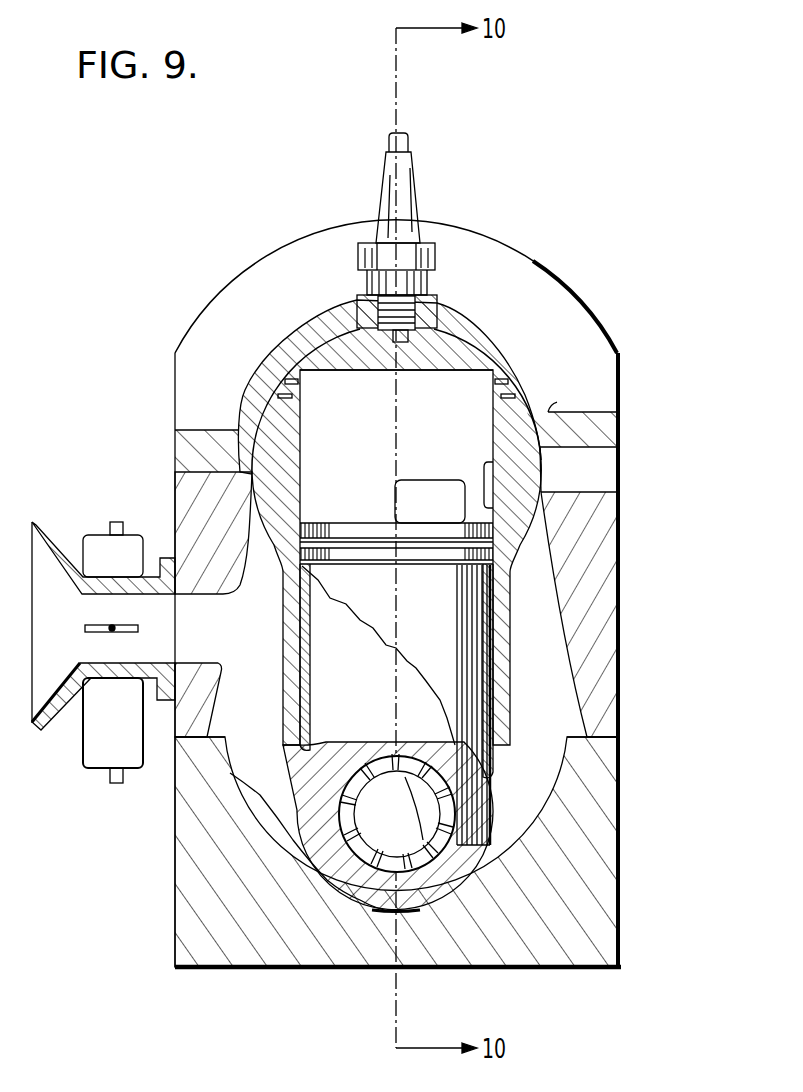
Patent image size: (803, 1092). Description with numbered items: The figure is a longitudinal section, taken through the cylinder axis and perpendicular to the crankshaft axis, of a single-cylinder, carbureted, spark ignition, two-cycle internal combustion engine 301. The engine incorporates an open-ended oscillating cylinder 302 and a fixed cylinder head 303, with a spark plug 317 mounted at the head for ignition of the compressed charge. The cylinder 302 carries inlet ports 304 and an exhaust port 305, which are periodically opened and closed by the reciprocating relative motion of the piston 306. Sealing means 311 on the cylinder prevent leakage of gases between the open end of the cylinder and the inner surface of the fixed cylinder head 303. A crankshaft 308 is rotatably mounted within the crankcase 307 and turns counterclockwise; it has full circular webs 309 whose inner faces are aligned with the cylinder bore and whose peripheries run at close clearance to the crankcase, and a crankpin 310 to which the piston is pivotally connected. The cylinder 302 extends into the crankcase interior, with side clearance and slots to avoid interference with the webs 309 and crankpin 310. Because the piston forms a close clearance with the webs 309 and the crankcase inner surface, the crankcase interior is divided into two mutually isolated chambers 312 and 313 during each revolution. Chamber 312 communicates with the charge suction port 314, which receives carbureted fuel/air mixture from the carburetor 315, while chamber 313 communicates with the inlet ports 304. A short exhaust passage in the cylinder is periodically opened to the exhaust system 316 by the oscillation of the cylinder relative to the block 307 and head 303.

The two-cycle internal combustion engine 301 is at (597, 272).
The oscillating cylinder 302 is at (548, 410).
The fixed cylinder head 303 is at (545, 400).
The inlet ports 304 is at (453, 503).
The exhaust port 305 is at (515, 448).
The piston 306 is at (430, 625).
The crankcase 307 is at (620, 697).
The crankshaft 308 is at (465, 880).
The webs 309 is at (290, 782).
The crankpin 310 is at (475, 910).
The sealing means 311 is at (505, 385).
The chamber 312 is at (250, 778).
The chamber 313 is at (542, 792).
The charge suction port 314 is at (227, 628).
The carburetor 315 is at (83, 742).
The exhaust system 316 is at (597, 472).
The spark plug 317 is at (420, 193).